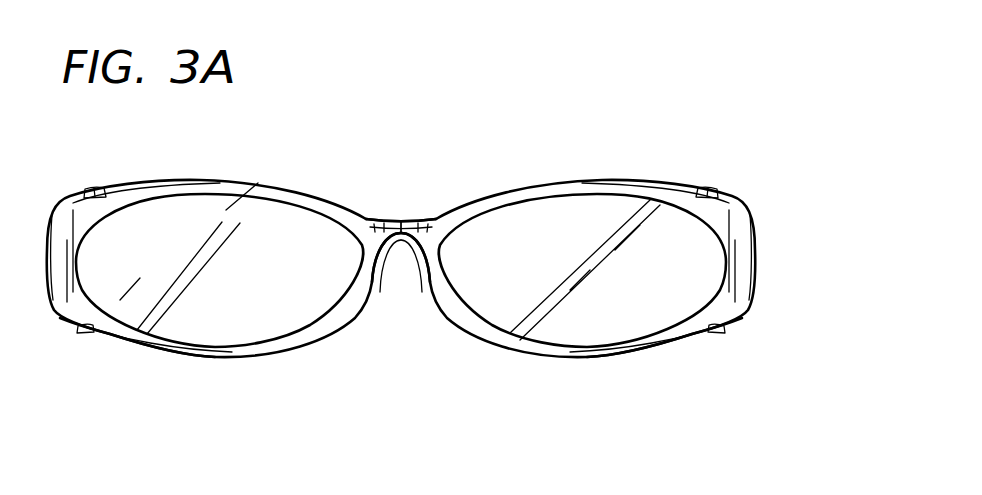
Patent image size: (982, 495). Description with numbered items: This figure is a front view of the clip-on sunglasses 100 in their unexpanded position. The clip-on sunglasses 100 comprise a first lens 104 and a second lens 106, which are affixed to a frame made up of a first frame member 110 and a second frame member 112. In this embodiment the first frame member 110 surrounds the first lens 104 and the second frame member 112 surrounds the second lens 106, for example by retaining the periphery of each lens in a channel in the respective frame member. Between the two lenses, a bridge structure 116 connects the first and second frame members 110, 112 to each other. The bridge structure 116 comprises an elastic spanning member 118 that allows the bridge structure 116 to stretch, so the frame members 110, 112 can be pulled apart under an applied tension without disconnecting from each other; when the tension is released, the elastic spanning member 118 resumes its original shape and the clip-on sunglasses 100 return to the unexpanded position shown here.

The clip-on sunglasses 100 is at (775, 185).
The first lens 104 is at (282, 282).
The second lens 106 is at (680, 282).
The first frame member 110 is at (173, 358).
The second frame member 112 is at (615, 358).
The bridge structure 116 is at (400, 197).
The elastic spanning member 118 is at (402, 242).